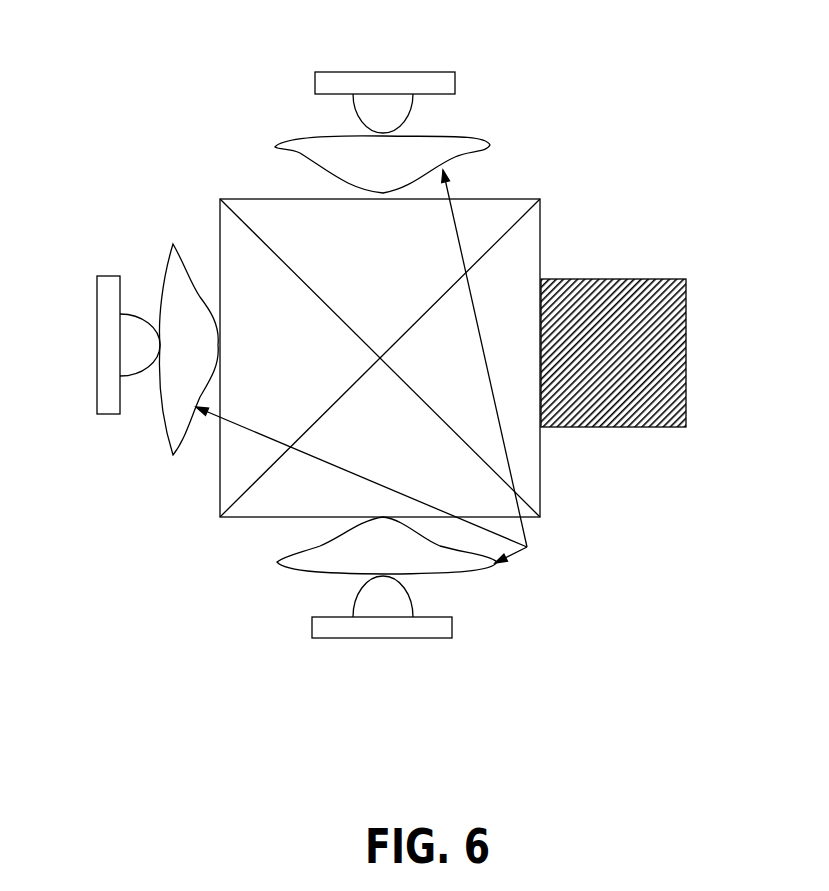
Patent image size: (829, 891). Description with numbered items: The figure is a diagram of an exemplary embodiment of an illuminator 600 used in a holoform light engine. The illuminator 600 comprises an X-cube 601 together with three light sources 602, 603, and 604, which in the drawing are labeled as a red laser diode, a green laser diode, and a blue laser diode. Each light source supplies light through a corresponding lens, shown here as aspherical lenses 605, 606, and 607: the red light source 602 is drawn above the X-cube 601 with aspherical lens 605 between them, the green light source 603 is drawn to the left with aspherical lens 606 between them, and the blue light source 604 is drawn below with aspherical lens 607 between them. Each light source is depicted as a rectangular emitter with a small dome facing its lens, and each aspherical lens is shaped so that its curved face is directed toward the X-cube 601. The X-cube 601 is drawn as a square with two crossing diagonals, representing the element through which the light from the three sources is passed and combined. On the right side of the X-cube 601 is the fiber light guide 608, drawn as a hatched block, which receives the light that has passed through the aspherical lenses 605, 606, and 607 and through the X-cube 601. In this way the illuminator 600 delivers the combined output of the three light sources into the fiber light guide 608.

The illuminator 600 is at (776, 46).
The X-cube 601 is at (503, 198).
The light source 602 is at (445, 72).
The light source 603 is at (97, 340).
The light source 604 is at (440, 638).
The aspherical lens 605 is at (467, 137).
The aspherical lens 606 is at (172, 242).
The aspherical lens 607 is at (460, 572).
The fiber light guide 608 is at (670, 279).